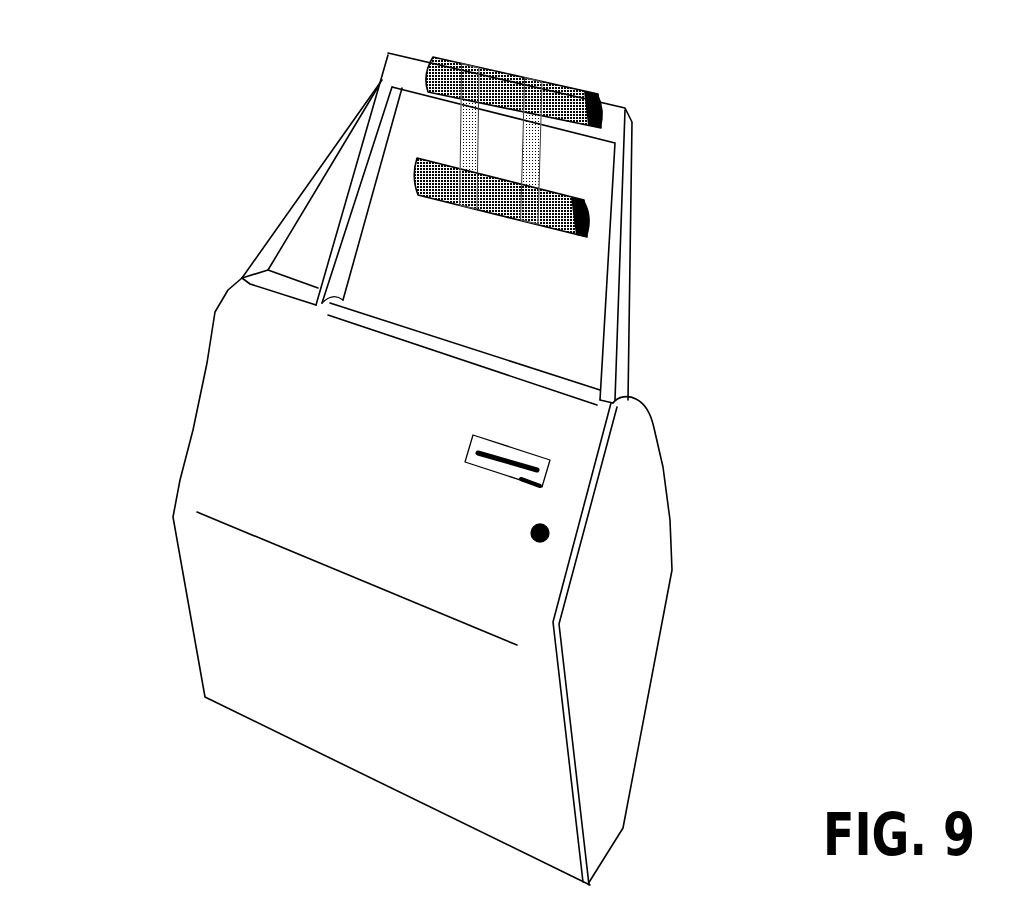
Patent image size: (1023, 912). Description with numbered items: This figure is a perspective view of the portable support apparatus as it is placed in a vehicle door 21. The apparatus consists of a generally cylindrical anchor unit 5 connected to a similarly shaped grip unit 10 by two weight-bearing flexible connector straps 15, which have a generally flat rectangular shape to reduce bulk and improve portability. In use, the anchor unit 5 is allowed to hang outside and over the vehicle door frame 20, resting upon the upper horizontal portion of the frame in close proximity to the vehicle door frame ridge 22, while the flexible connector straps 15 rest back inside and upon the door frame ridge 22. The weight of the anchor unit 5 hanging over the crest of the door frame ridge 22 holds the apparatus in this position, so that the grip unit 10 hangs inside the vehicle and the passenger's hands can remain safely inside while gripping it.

The anchor unit 5 is at (513, 73).
The grip unit 10 is at (580, 236).
The flexible connector straps 15 is at (462, 133).
The vehicle door frame 20 is at (632, 123).
The vehicle door 21 is at (422, 581).
The vehicle door frame ridge 22 is at (392, 65).